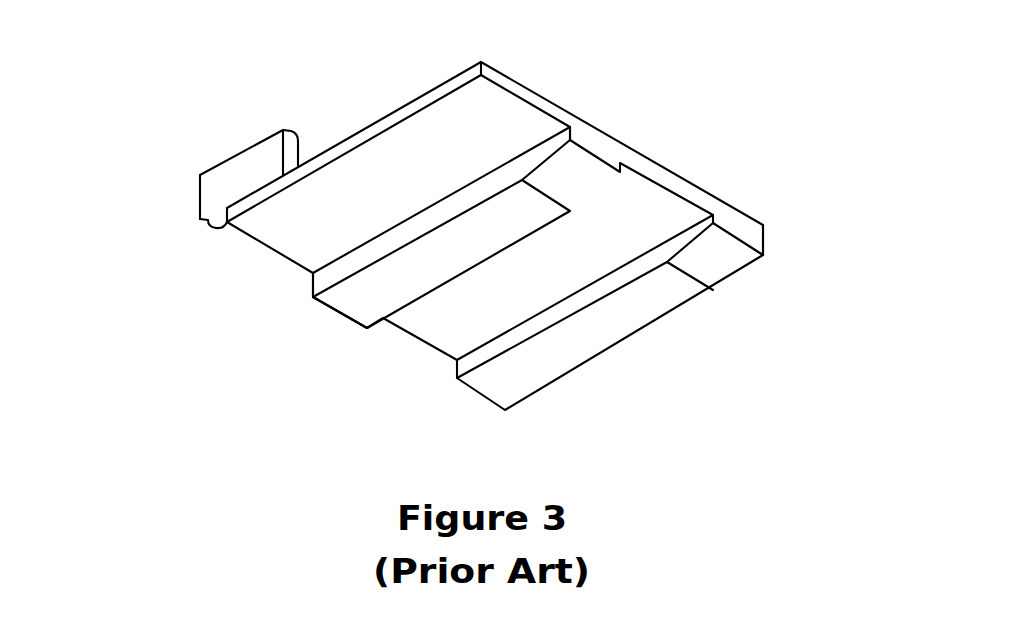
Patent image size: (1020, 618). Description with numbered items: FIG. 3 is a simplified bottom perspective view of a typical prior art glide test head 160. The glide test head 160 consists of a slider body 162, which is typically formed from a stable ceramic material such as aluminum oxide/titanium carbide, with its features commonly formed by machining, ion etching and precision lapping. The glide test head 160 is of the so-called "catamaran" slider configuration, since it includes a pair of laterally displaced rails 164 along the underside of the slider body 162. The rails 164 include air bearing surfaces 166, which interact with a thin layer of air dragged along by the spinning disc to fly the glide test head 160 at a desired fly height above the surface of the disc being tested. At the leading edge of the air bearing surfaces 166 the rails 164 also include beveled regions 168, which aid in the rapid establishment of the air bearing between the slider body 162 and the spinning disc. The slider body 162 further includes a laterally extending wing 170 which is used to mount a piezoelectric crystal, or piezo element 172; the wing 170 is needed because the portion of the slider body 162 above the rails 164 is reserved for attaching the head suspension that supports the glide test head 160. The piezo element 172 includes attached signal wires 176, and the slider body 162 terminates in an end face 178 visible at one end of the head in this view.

The glide test head 160 is at (800, 93).
The slider body 162 is at (600, 140).
The rails 164 is at (378, 242).
The air bearing surfaces 166 is at (447, 255).
The beveled regions 168 is at (588, 178).
The wing 170 is at (488, 98).
The piezo element 172 is at (275, 148).
The signal wires 176 is at (213, 228).
The end face 178 is at (352, 307).